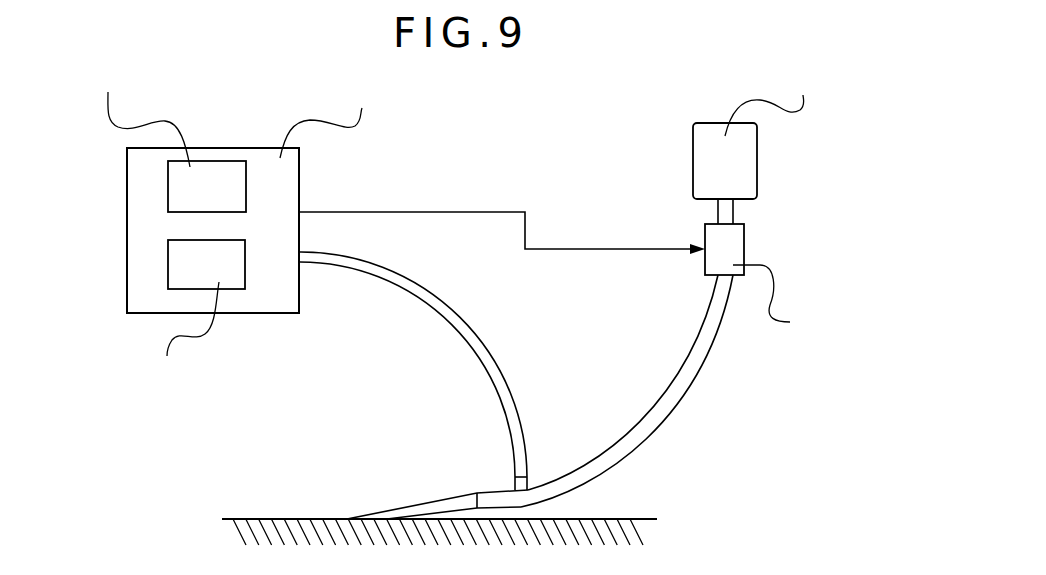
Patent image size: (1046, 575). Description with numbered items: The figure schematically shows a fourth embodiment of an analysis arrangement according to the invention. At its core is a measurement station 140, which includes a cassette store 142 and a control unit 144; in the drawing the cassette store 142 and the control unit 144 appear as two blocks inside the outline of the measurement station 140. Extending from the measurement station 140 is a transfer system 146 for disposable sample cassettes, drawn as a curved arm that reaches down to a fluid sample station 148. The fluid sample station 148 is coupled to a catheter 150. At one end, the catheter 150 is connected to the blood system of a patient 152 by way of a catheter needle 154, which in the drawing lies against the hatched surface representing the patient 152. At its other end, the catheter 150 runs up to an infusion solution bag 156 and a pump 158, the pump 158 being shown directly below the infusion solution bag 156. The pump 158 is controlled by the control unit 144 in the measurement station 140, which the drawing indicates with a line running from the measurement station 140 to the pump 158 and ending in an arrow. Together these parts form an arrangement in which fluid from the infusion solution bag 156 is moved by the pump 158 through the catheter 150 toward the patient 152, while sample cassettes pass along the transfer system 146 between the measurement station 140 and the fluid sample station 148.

The measurement station 140 is at (299, 195).
The cassette store 142 is at (141, 124).
The control unit 144 is at (165, 327).
The transfer system 146 is at (418, 307).
The fluid sample station 148 is at (513, 478).
The catheter 150 is at (667, 397).
The patient 152 is at (272, 519).
The catheter needle 154 is at (425, 500).
The infusion solution bag 156 is at (803, 119).
The pump 158 is at (744, 247).